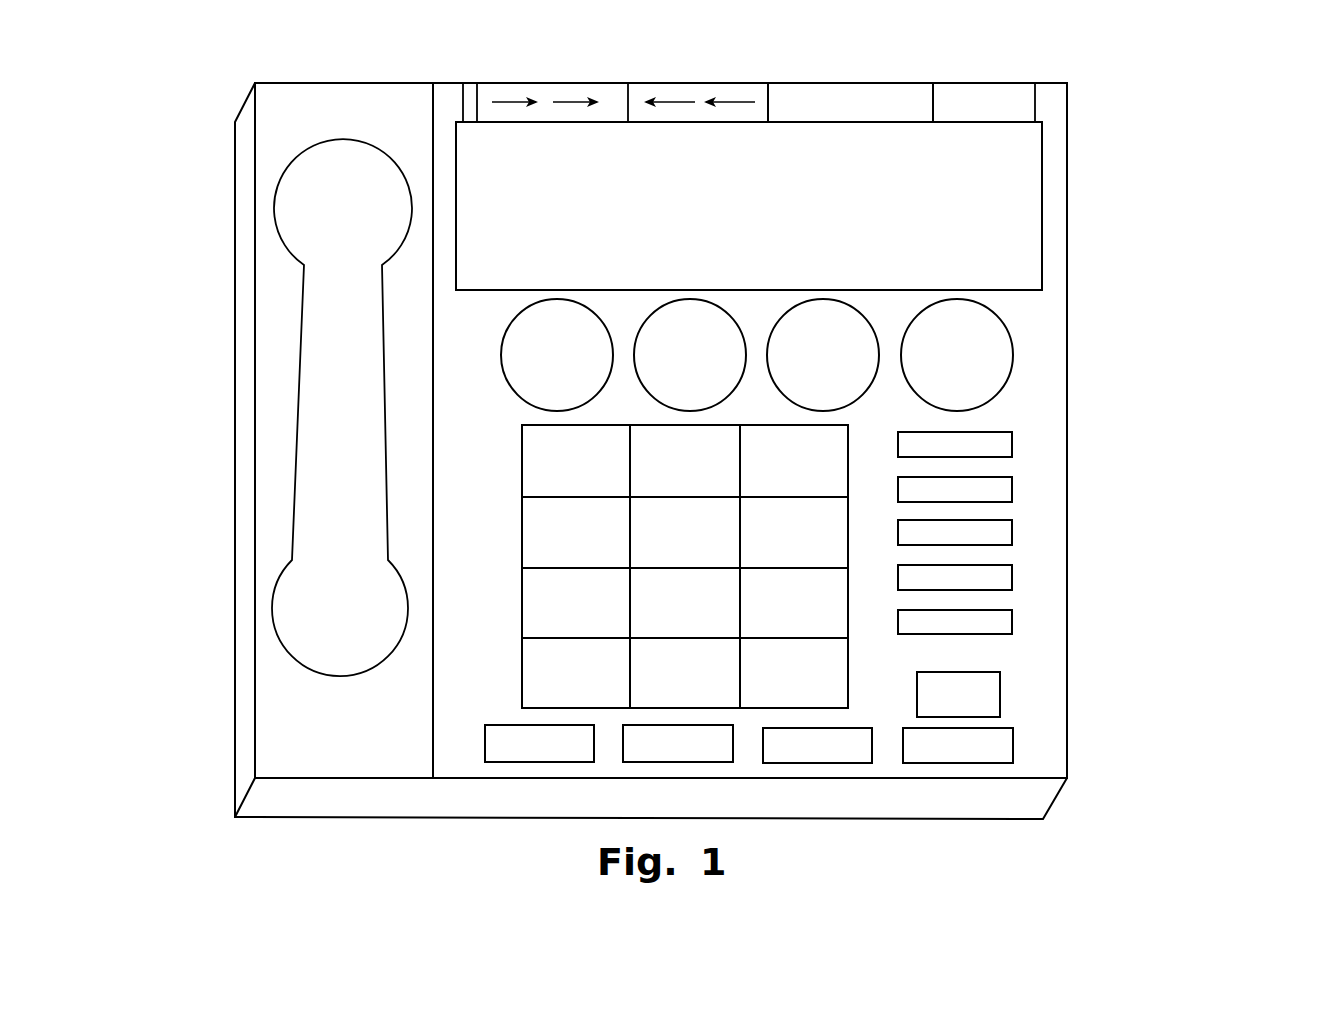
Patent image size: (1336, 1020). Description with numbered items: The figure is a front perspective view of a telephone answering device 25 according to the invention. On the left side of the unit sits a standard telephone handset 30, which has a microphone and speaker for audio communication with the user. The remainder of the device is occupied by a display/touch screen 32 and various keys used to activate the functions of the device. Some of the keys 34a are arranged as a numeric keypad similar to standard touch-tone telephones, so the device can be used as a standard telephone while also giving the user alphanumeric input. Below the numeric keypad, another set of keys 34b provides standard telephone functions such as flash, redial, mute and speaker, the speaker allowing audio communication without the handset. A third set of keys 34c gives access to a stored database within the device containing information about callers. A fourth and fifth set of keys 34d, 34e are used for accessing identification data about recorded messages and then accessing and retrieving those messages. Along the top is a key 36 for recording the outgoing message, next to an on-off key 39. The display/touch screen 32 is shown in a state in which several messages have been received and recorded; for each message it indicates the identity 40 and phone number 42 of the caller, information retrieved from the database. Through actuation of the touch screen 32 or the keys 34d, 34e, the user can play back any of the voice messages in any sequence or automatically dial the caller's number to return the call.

The telephone answering device 25 is at (1124, 232).
The telephone handset 30 is at (276, 632).
The display/touch screen 32 is at (799, 155).
The keys arranged as a numeric keypad 34a is at (520, 643).
The set of keys for standard telephone functions 34b is at (1019, 745).
The third set of keys 34c is at (1024, 500).
The fourth set of keys 34d is at (1016, 346).
The fifth set of keys 34e is at (598, 80).
The key for recording the outgoing message 36 is at (843, 92).
The on-off button 39 is at (987, 92).
The identity 40 is at (484, 130).
The phone number 42 is at (758, 130).